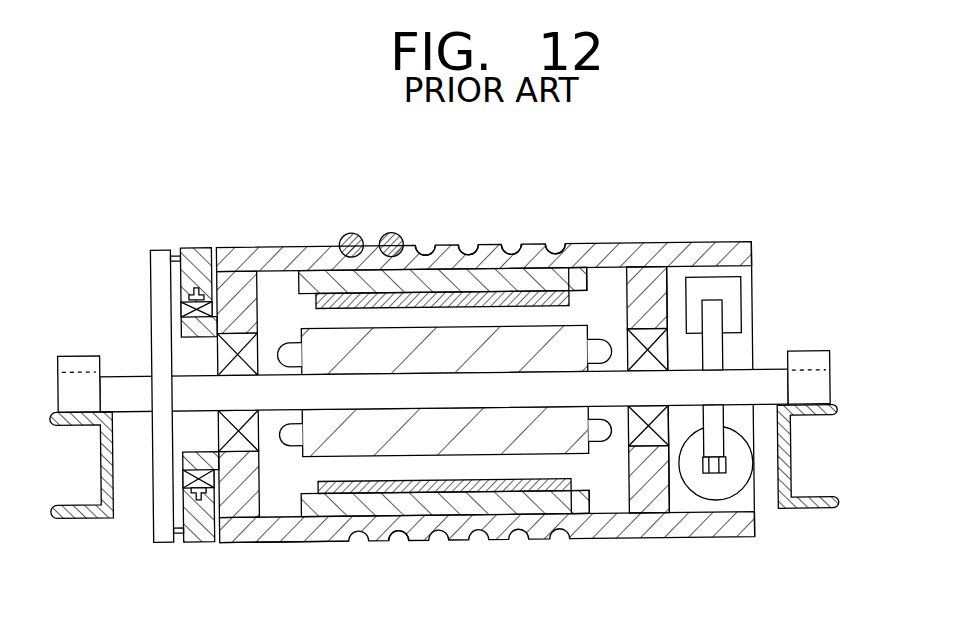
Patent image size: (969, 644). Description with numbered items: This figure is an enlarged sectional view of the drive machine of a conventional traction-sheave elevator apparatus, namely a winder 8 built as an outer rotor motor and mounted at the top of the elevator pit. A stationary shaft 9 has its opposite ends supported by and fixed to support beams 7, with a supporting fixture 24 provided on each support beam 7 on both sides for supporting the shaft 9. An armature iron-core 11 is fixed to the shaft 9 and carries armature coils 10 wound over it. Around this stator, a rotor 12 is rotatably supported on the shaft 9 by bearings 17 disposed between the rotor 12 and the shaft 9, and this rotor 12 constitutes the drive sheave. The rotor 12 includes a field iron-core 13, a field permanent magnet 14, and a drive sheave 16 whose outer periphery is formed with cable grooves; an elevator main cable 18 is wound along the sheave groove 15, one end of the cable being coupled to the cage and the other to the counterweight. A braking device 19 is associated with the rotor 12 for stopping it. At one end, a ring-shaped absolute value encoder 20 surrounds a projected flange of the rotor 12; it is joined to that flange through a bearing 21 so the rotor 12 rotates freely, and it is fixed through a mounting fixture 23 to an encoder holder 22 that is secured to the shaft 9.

The support beam 7 is at (80, 514).
The winder 8 is at (740, 355).
The stationary shaft 9 is at (132, 410).
The armature coil 10 is at (598, 347).
The armature iron-core 11 is at (558, 259).
The rotor 12 is at (728, 245).
The field iron-core 13 is at (460, 277).
The field permanent magnet 14 is at (432, 298).
The sheave groove 15 is at (477, 244).
The drive sheave 16 is at (332, 540).
The bearing 17 is at (240, 338).
The elevator main cable 18 is at (392, 232).
The braking device 19 is at (757, 334).
The absolute value encoder 20 is at (192, 245).
The bearing 21 is at (173, 310).
The encoder holder 22 is at (163, 270).
The mounting fixture 23 is at (173, 247).
The supporting fixture 24 is at (87, 366).